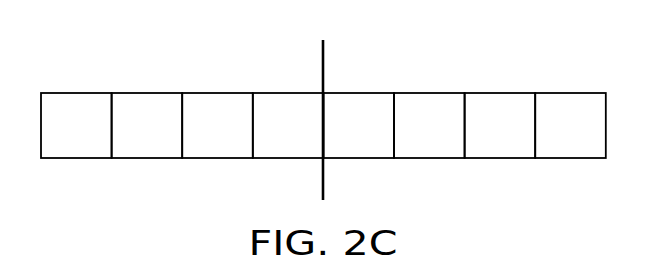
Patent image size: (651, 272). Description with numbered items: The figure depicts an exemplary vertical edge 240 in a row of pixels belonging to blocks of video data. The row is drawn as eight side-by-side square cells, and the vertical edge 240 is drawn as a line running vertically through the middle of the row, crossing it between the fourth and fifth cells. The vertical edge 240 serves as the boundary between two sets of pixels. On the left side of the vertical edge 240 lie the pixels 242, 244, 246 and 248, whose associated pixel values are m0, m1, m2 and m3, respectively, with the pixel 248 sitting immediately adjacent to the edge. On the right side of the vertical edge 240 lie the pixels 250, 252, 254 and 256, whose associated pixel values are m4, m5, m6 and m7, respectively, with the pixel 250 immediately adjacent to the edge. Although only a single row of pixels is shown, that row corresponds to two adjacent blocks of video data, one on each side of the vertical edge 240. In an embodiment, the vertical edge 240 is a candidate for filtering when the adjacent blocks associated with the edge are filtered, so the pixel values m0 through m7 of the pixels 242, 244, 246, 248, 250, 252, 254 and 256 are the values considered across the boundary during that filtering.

The vertical edge 240 is at (320, 170).
The pixel 242 is at (75, 102).
The pixel 244 is at (146, 102).
The pixel 246 is at (216, 102).
The pixel 248 is at (287, 102).
The pixel 250 is at (359, 101).
The pixel 252 is at (429, 101).
The pixel 254 is at (500, 101).
The pixel 256 is at (571, 101).